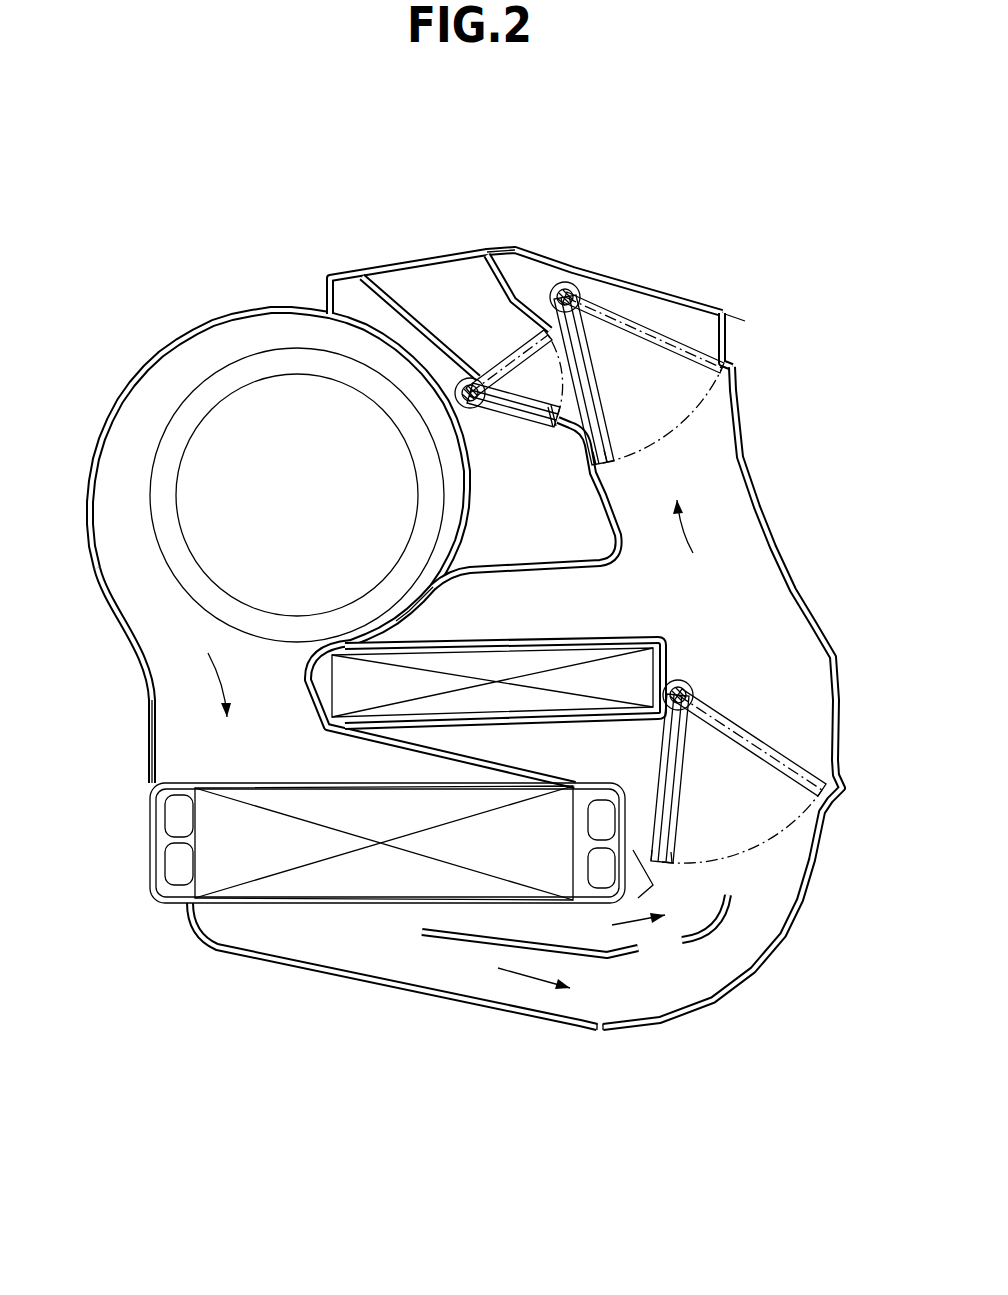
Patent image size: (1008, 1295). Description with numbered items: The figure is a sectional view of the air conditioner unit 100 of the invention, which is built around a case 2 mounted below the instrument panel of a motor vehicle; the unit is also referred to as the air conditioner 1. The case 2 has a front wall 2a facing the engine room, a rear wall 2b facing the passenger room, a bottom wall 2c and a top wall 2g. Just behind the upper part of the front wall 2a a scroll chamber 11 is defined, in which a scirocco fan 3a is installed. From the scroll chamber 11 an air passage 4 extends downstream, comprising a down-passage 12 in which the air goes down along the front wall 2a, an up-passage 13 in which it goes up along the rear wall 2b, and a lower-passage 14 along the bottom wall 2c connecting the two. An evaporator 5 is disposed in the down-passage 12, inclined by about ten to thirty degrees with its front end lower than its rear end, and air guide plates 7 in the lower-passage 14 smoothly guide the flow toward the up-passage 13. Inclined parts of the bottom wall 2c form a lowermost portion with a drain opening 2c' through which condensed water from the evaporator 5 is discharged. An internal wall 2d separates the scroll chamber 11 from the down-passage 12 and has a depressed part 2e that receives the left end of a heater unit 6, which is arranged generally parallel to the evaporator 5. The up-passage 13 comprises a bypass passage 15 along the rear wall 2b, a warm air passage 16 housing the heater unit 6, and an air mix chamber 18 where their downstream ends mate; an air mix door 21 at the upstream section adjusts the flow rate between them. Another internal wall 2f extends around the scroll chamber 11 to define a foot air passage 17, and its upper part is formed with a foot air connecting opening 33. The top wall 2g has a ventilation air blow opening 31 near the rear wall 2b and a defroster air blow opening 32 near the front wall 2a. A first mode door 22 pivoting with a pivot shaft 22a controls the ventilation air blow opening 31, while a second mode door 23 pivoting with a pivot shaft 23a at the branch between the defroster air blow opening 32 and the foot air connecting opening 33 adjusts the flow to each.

The air conditioner unit 100 is at (709, 137).
The air conditioning unit 1 is at (487, 192).
The case 2 is at (235, 300).
The front wall 2a is at (113, 615).
The rear wall 2b is at (780, 548).
The bottom wall 2c is at (393, 977).
The drain opening 2c' is at (595, 1074).
The internal wall 2d is at (418, 615).
The depressed part 2e is at (312, 683).
The internal wall 2f is at (580, 568).
The top wall 2g is at (540, 256).
The scirocco fan 3a is at (195, 398).
The air passage 4 is at (175, 740).
The evaporator 5 is at (365, 875).
The heater unit 6 is at (530, 702).
The air guide plates 7 is at (555, 945).
The scroll chamber 11 is at (146, 480).
The down-passage 12 is at (264, 765).
The up-passage 13 is at (727, 590).
The lower-passage 14 is at (654, 1003).
The bypass passage 15 is at (779, 693).
The warm air passage 16 is at (552, 618).
The foot air passage 17 is at (544, 523).
The air mix chamber 18 is at (692, 491).
The air mix door 21 is at (682, 790).
The first mode door 22 is at (600, 388).
The pivot shaft 22a is at (575, 290).
The second mode door 23 is at (497, 336).
The pivot shaft 23a is at (420, 290).
The ventilation air blow opening 31 is at (640, 300).
The defroster air blow opening 32 is at (430, 286).
The foot air connecting opening 33 is at (517, 420).